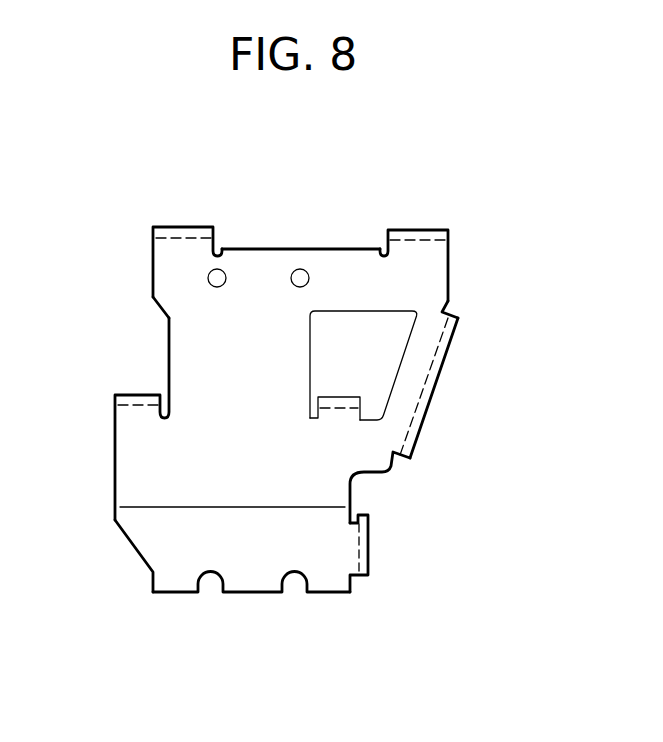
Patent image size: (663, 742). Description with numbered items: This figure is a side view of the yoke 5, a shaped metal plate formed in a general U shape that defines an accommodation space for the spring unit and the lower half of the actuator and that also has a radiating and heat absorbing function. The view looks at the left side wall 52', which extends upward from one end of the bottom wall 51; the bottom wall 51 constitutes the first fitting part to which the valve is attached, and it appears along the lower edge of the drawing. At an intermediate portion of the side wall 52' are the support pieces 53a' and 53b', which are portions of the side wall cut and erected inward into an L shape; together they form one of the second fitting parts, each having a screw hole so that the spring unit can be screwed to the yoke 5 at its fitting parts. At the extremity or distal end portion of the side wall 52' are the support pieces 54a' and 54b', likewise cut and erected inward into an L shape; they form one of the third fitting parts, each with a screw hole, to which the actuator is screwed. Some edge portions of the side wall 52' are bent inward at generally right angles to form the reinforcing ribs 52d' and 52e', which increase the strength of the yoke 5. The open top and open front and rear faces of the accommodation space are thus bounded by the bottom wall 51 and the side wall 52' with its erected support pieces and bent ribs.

The yoke 5 is at (148, 256).
The bottom wall 51 is at (257, 595).
The left side wall 52' is at (193, 519).
The reinforcing rib 52d' is at (459, 388).
The reinforcing rib 52e' is at (414, 553).
The support piece 53a' is at (126, 419).
The support piece 53b' is at (419, 381).
The support piece 54a' is at (184, 221).
The support piece 54b' is at (420, 225).